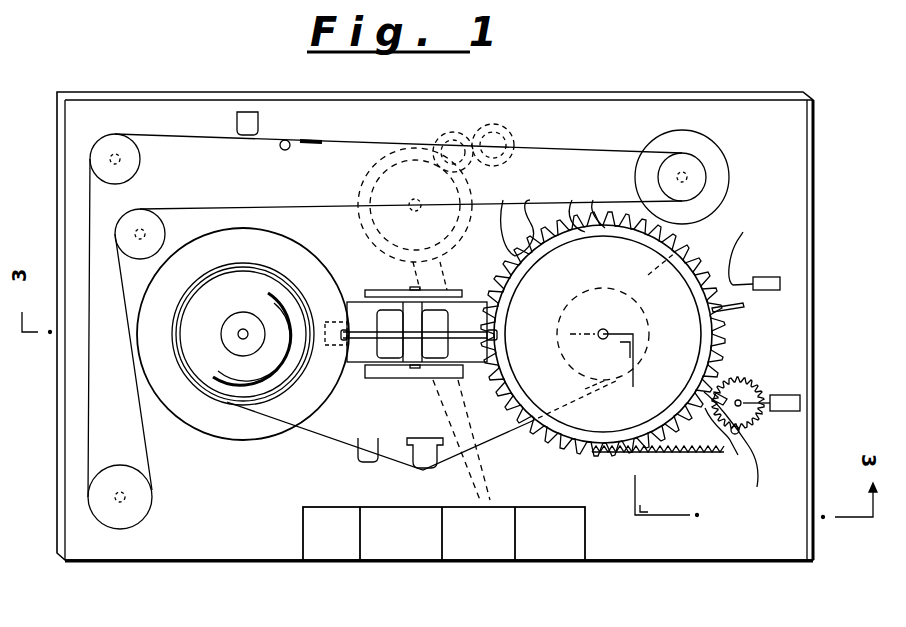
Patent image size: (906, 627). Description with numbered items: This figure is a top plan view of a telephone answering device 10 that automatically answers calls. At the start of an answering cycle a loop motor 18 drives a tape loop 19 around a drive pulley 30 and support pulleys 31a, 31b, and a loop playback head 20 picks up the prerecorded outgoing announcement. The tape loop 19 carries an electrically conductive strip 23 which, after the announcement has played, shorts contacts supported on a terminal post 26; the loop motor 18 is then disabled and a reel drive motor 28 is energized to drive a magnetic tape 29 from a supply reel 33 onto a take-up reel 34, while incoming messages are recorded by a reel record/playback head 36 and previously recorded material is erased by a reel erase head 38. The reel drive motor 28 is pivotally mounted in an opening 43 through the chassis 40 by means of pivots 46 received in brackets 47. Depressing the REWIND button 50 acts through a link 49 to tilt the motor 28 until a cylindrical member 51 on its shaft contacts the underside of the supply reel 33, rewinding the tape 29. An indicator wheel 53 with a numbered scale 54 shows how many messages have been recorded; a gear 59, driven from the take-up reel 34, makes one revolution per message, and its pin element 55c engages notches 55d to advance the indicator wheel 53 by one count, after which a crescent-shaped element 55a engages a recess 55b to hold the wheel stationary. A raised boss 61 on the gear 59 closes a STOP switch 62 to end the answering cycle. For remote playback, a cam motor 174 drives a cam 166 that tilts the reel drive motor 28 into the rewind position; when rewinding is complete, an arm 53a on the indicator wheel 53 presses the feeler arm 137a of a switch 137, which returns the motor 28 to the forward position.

The telephone answering device 10 is at (84, 588).
The loop motor 18 is at (715, 199).
The tape loop 19 is at (586, 147).
The loop playback head 20 is at (259, 125).
The electrically conductive strip 23 is at (316, 146).
The terminal post 26 is at (285, 151).
The reel drive motor 28 is at (390, 325).
The magnetic tape 29 is at (345, 457).
The drive pulley 30 is at (706, 174).
The support pulley 31a is at (140, 160).
The support pulley 31b is at (139, 510).
The supply reel 33 is at (230, 439).
The take-up reel 34 is at (684, 249).
The reel record/playback head 36 is at (434, 438).
The reel erase head 38 is at (366, 440).
The chassis 40 is at (705, 541).
The opening 43 is at (490, 306).
The pivots 46 is at (404, 378).
The brackets 47 is at (400, 291).
The link 49 is at (478, 478).
The REWIND button 50 is at (485, 545).
The cylindrical member 51 is at (340, 347).
The indicator wheel 53 is at (600, 455).
The arm 53a is at (745, 306).
The numbered scale 54 is at (667, 496).
The crescent-shaped element 55a is at (742, 386).
The recess 55b is at (580, 201).
The pin element 55c is at (745, 451).
The notches 55d is at (514, 215).
The gear 59 is at (738, 455).
The raised boss 61 is at (738, 433).
The STOP switch 62 is at (800, 403).
The switch 137 is at (759, 277).
The feeler arm 137a is at (762, 252).
The cam 166 is at (408, 151).
The cam motor 174 is at (512, 117).